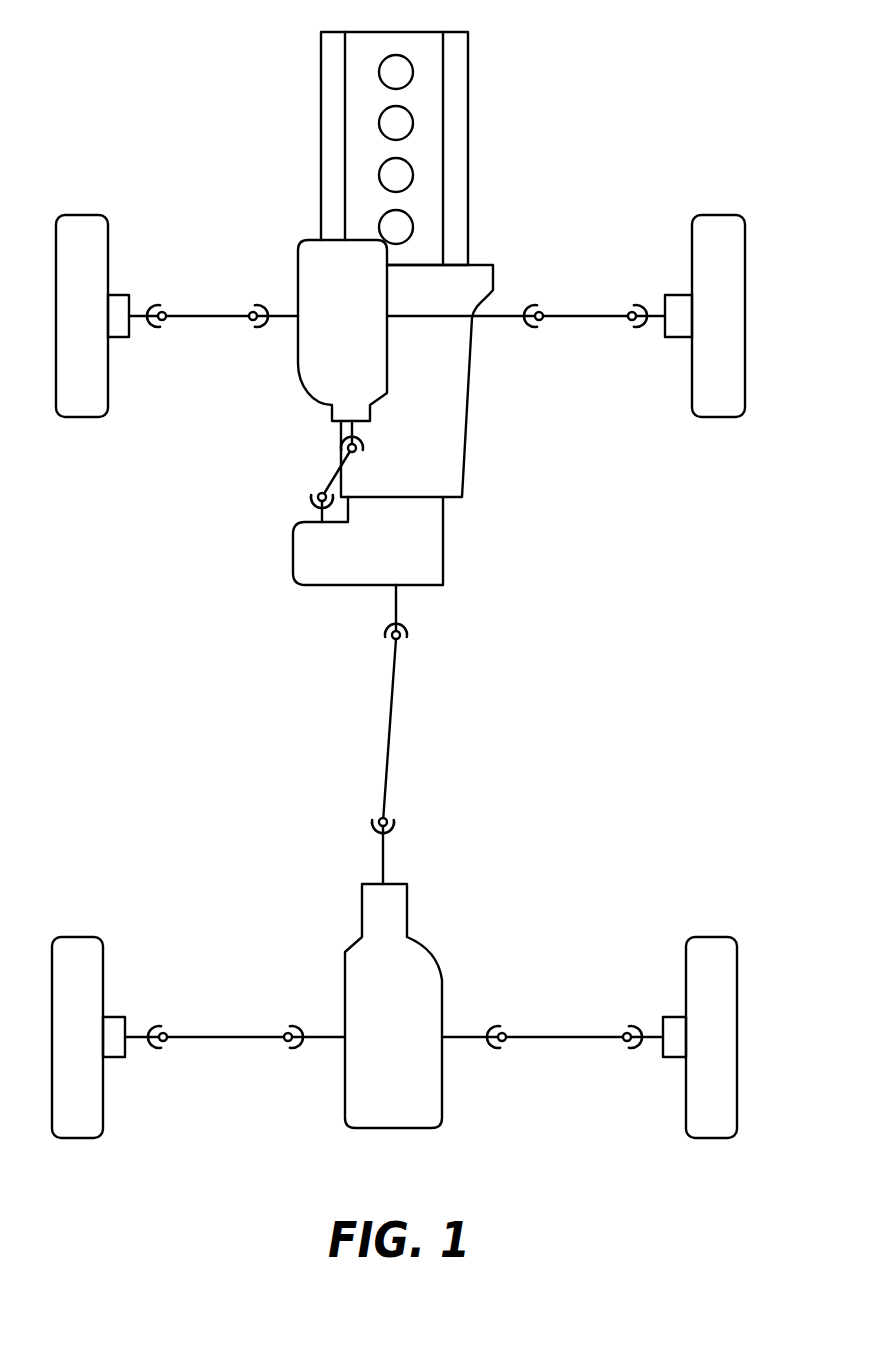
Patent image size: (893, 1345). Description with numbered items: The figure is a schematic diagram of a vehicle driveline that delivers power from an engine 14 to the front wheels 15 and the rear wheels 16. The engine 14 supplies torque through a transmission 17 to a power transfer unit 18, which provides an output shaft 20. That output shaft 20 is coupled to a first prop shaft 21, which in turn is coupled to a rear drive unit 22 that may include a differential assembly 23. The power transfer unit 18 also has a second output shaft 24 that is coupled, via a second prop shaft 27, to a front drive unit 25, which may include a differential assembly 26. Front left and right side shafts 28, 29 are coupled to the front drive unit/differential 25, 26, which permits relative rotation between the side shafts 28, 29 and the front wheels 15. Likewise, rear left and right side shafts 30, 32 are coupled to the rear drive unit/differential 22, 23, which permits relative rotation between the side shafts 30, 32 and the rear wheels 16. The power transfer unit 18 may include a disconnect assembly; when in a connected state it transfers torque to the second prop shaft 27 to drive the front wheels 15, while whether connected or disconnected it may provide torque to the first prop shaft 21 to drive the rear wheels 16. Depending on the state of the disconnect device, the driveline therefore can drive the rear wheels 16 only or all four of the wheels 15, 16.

The engine 14 is at (468, 85).
The front wheels 15 is at (84, 215).
The rear wheels 16 is at (80, 937).
The transmission 17 is at (465, 383).
The power transfer unit 18 is at (443, 548).
The output shaft 20 is at (396, 605).
The first prop shaft 21 is at (393, 686).
The rear drive unit 22 is at (418, 1041).
The differential assembly 23 is at (387, 1128).
The output shaft 24 is at (322, 517).
The front drive unit 25 is at (284, 330).
The differential assembly 26 is at (298, 363).
The second prop shaft 27 is at (337, 475).
The front left side shaft 28 is at (214, 300).
The front right side shaft 29 is at (586, 300).
The rear left side shaft 30 is at (226, 1020).
The rear right side shaft 32 is at (566, 1020).